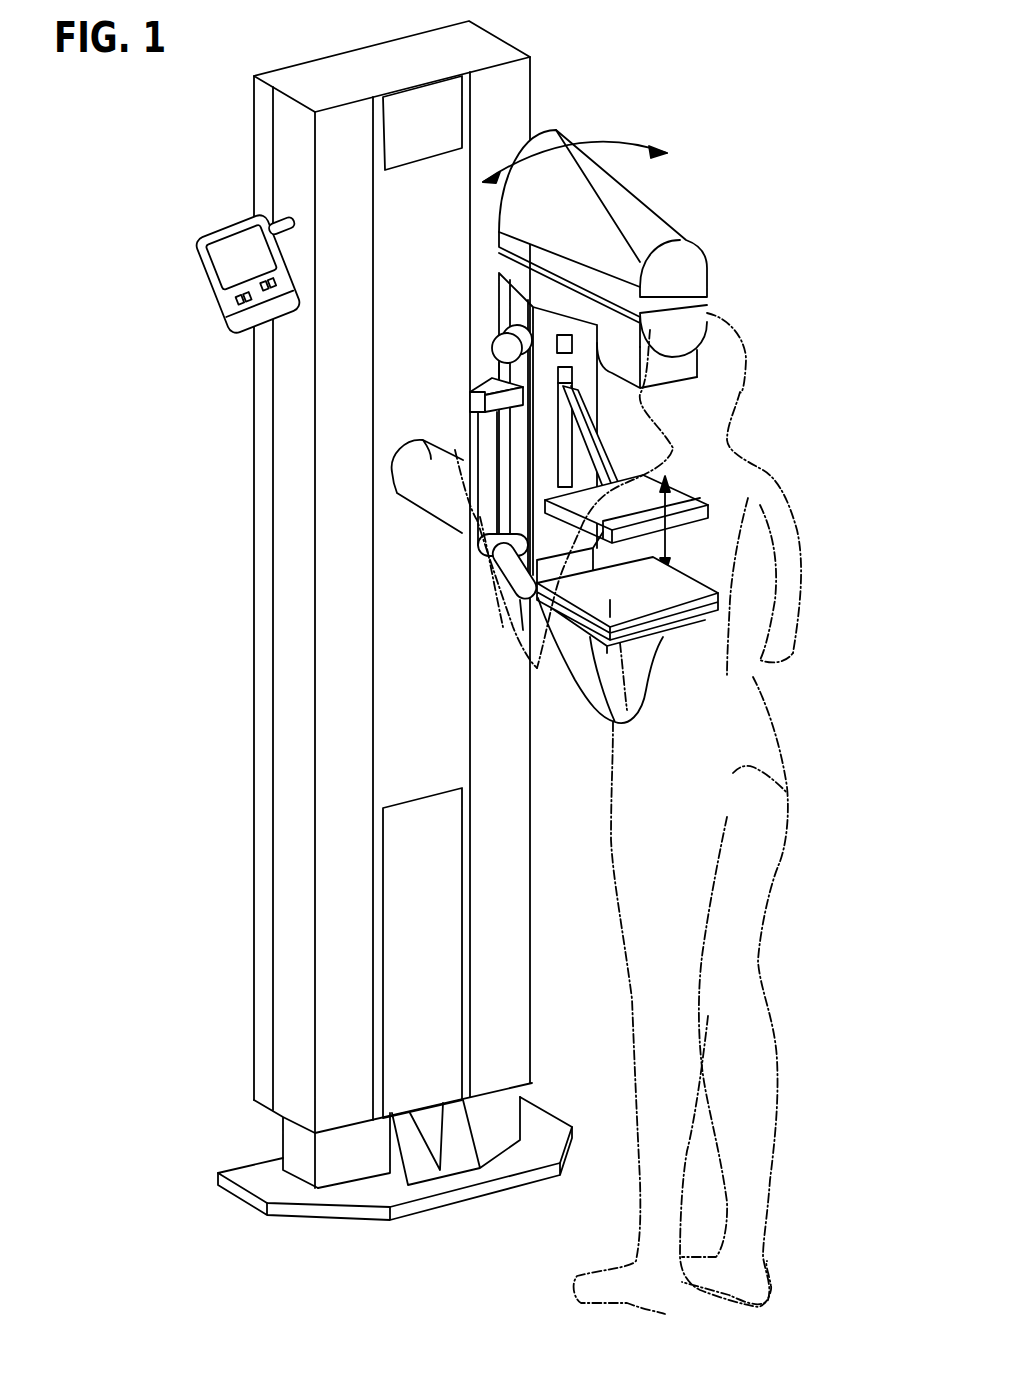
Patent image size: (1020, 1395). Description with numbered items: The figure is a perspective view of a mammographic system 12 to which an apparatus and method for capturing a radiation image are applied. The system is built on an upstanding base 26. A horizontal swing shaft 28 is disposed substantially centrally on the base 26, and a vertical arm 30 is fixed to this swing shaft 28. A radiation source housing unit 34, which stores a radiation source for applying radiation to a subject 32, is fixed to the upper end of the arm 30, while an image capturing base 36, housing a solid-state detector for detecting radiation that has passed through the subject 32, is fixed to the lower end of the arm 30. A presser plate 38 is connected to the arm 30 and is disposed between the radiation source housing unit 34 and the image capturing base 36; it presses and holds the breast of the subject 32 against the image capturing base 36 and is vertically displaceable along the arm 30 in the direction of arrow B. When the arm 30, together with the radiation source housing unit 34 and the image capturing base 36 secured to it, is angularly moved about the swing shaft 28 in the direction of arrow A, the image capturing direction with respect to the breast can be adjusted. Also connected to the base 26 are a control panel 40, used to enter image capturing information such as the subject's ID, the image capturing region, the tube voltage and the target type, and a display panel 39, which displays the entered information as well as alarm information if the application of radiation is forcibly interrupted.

The mammographic system 12 is at (776, 171).
The upstanding base 26 is at (300, 852).
The horizontal swing shaft 28 is at (428, 453).
The vertical arm 30 is at (523, 320).
The subject 32 is at (792, 792).
The radiation source housing unit 34 is at (688, 280).
The image capturing base 36 is at (627, 605).
The presser plate 38 is at (706, 516).
The display panel 39 is at (233, 263).
The control panel 40 is at (242, 307).